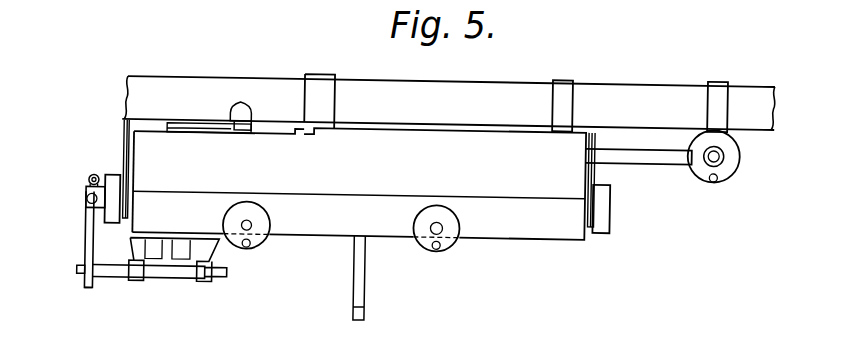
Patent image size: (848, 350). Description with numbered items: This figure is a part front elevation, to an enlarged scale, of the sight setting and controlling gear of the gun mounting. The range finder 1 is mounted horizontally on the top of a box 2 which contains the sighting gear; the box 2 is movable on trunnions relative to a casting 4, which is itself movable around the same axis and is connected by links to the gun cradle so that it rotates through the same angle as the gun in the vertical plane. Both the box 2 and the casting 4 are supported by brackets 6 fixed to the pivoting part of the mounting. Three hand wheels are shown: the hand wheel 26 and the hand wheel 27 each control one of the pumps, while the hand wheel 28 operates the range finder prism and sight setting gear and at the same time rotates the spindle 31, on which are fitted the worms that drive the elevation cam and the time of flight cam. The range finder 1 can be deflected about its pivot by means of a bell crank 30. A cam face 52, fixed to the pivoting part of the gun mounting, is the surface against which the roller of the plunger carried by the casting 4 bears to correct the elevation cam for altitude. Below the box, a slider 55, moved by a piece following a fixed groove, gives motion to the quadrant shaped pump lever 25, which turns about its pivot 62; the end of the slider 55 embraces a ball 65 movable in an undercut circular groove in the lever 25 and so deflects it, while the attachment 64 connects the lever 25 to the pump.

The range finder 1 is at (500, 86).
The box 2 is at (359, 182).
The casting 4 is at (125, 140).
The brackets 6 is at (115, 214).
The pump lever 25 is at (92, 289).
The hand wheel 26 is at (453, 225).
The hand wheel 27 is at (272, 221).
The hand wheel 28 is at (735, 154).
The bell crank 30 is at (192, 121).
The spindle 31 is at (648, 151).
The cam face 52 is at (358, 268).
The slider 55 is at (166, 268).
The pivot 62 is at (88, 208).
The attachment to the pump 64 is at (89, 179).
The ball 65 is at (87, 275).